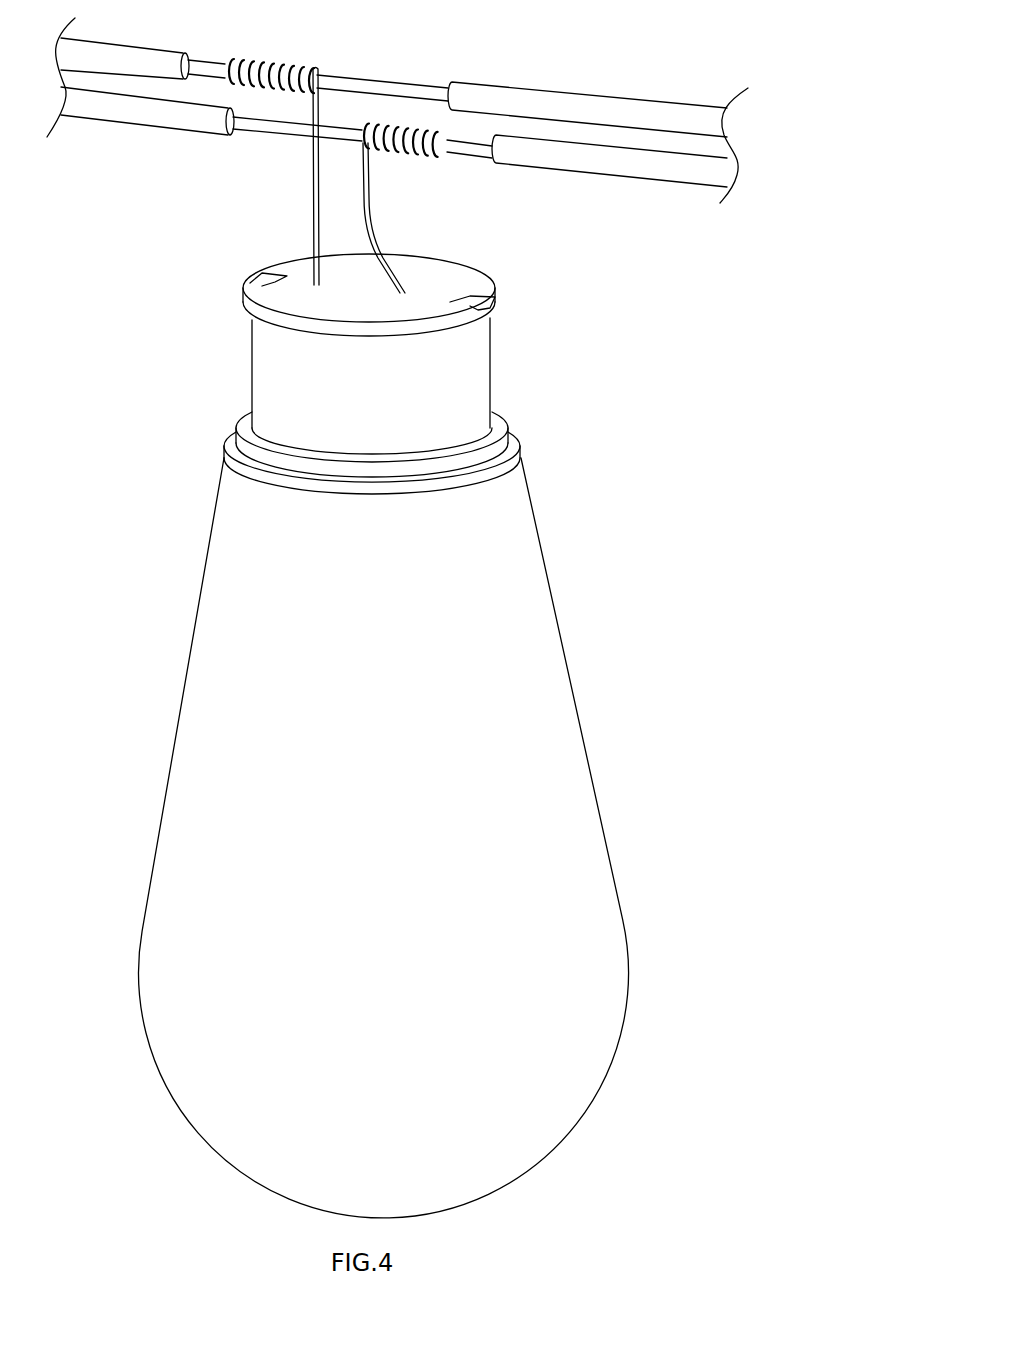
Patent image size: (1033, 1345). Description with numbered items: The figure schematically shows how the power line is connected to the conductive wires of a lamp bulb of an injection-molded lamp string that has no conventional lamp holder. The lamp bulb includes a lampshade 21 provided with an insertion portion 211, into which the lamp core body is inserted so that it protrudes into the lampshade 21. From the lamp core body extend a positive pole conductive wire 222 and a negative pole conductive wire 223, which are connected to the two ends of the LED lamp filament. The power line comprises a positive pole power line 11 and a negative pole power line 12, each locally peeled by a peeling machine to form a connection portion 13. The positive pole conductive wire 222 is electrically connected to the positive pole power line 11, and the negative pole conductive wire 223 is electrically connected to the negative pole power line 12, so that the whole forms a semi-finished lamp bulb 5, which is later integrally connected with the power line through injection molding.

The semi-finished lamp bulb 5 is at (402, 643).
The positive pole power line 11 is at (575, 108).
The negative pole power line 12 is at (593, 158).
The connection portion 13 is at (298, 56).
The lampshade 21 is at (188, 825).
The insertion portion 211 is at (278, 387).
The positive pole conductive wire 222 is at (318, 182).
The negative pole conductive wire 223 is at (368, 192).